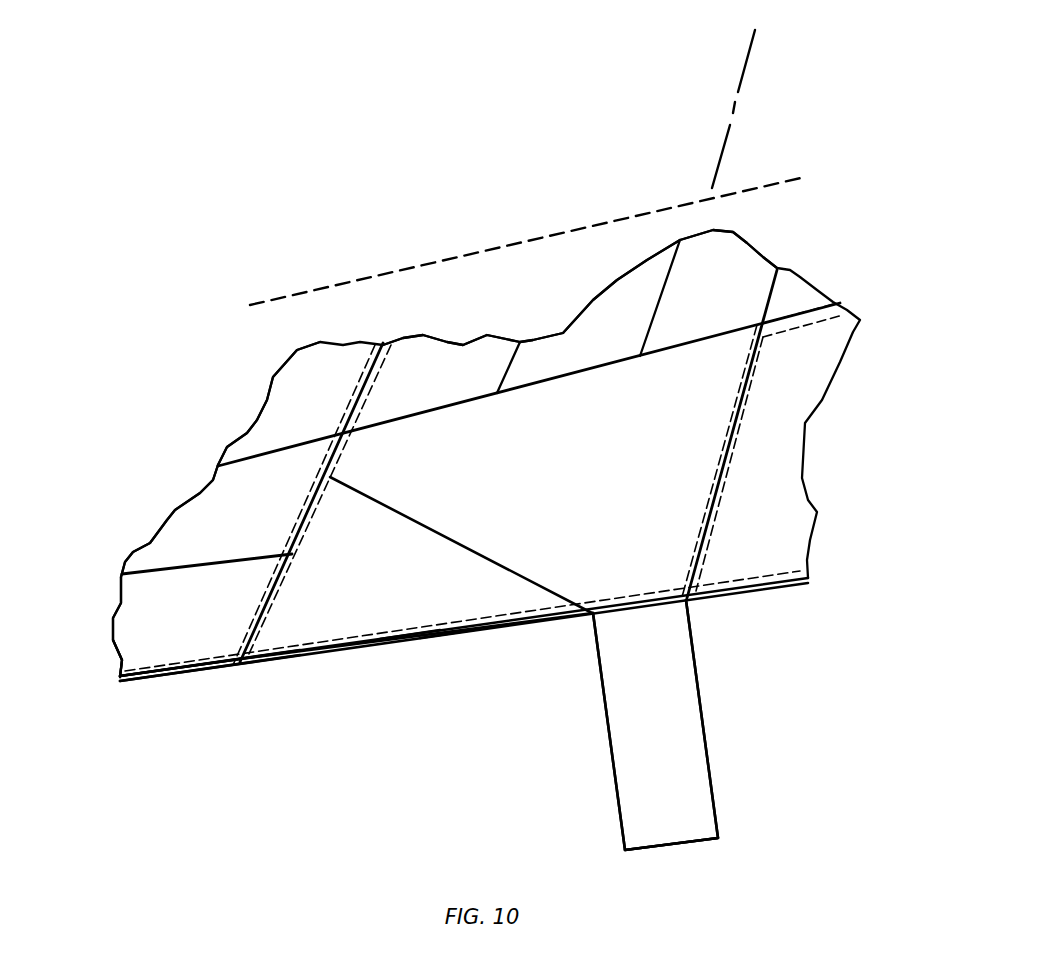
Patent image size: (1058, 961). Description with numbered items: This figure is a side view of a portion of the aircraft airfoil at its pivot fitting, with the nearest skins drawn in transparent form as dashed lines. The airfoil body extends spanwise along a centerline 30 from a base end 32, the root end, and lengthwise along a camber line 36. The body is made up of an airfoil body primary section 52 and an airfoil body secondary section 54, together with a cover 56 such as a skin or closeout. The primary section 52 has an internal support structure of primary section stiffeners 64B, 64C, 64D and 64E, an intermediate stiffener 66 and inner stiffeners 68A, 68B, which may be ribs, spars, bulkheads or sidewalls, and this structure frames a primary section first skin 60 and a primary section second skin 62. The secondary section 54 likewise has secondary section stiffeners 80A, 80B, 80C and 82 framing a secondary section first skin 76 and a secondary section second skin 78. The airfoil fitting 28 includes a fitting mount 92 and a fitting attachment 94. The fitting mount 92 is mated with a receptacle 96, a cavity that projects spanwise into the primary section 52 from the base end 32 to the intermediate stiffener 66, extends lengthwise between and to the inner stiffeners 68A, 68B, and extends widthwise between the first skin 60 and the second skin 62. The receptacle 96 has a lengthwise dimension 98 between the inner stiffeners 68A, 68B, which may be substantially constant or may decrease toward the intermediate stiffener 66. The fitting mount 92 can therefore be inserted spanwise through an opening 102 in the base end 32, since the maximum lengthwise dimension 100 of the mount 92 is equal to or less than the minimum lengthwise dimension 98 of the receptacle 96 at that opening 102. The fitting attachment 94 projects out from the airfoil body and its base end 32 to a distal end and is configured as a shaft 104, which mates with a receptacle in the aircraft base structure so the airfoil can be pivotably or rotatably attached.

The airfoil fitting 28 is at (598, 760).
The centerline 30 is at (757, 40).
The base end 32 is at (195, 683).
The camber line 36 is at (778, 178).
The airfoil body primary section 52 is at (767, 602).
The airfoil body secondary section 54 is at (171, 686).
The cover 56 is at (812, 559).
The primary section first skin 60 is at (310, 638).
The primary section second skin 62 is at (817, 288).
The primary section stiffener 64B is at (383, 356).
The primary section stiffener 64C is at (515, 367).
The primary section stiffener 64D is at (660, 317).
The primary section stiffener 64E is at (773, 288).
The intermediate stiffener 66 is at (815, 316).
The inner stiffener 68A is at (288, 583).
The inner stiffener 68B is at (702, 548).
The secondary section first skin 76 is at (206, 655).
The secondary section second skin 78 is at (117, 658).
The secondary section stiffener 80A is at (138, 680).
The secondary section stiffener 80B is at (160, 571).
The secondary section stiffener 80C is at (273, 455).
The secondary section stiffener 82 is at (260, 609).
The fitting mount 92 is at (508, 576).
The fitting attachment 94 is at (708, 732).
The receptacle 96 is at (408, 612).
The lengthwise dimension 98 is at (297, 556).
The lengthwise dimension 100 is at (347, 442).
The opening 102 is at (442, 641).
The shaft 104 is at (717, 820).